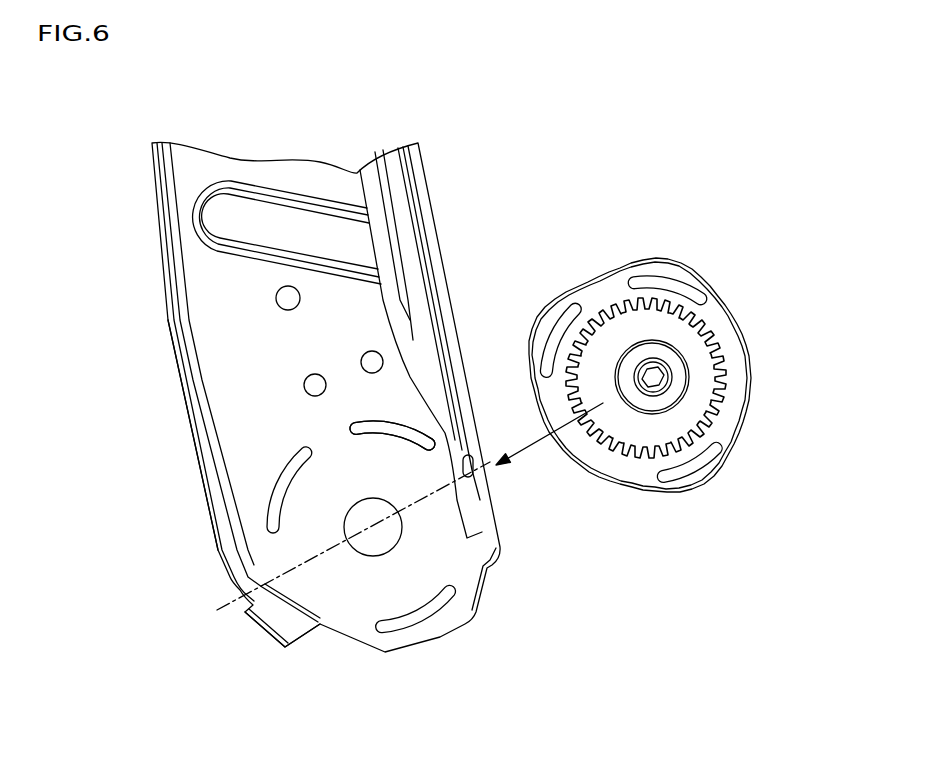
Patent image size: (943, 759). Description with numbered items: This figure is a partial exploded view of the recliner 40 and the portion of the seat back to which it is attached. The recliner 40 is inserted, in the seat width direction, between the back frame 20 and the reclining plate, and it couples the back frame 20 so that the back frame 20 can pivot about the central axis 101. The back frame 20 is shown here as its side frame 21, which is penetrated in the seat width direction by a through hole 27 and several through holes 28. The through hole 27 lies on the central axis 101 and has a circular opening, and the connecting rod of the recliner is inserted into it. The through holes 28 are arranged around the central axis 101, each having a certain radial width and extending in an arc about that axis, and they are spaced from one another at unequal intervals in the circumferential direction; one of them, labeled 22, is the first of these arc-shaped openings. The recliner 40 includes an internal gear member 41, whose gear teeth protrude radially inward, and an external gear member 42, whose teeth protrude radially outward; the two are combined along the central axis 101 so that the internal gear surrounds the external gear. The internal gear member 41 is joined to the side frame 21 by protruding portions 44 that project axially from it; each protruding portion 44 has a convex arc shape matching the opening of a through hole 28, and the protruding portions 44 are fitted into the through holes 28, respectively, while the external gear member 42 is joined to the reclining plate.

The back frame 20 is at (153, 121).
The side frame 21 is at (205, 317).
The slot (28A) 22 is at (412, 428).
The through hole 27 is at (373, 540).
The through holes 28 is at (283, 483).
The recliner 40 is at (638, 368).
The internal gear member 41 is at (735, 390).
The external gear member 42 is at (702, 357).
The protruding portions 44 is at (665, 284).
The central axis 101 is at (235, 603).